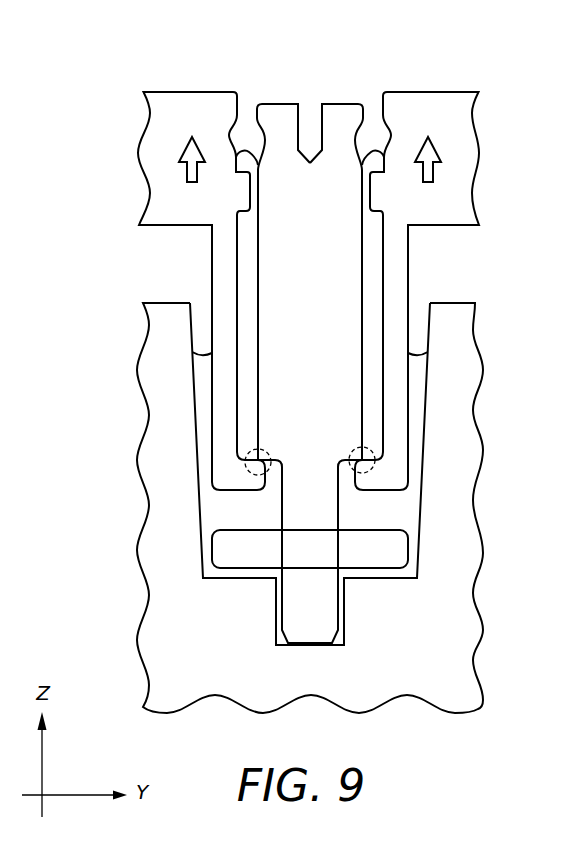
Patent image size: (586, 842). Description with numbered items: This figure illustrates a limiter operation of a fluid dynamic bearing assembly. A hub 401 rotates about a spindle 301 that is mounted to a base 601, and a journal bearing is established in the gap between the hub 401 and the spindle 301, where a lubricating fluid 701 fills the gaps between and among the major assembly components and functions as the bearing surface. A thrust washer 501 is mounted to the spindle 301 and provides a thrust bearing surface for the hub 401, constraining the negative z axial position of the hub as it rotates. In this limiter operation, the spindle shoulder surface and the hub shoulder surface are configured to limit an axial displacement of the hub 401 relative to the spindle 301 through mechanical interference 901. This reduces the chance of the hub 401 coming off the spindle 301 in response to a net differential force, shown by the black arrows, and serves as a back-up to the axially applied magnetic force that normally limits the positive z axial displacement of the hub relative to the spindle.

The spindle 301 is at (282, 270).
The hub 401 is at (178, 108).
The thrust washer 501 is at (375, 555).
The base 601 is at (238, 657).
The lubricating fluid 701 is at (215, 512).
The mechanical interference 901 is at (247, 455).